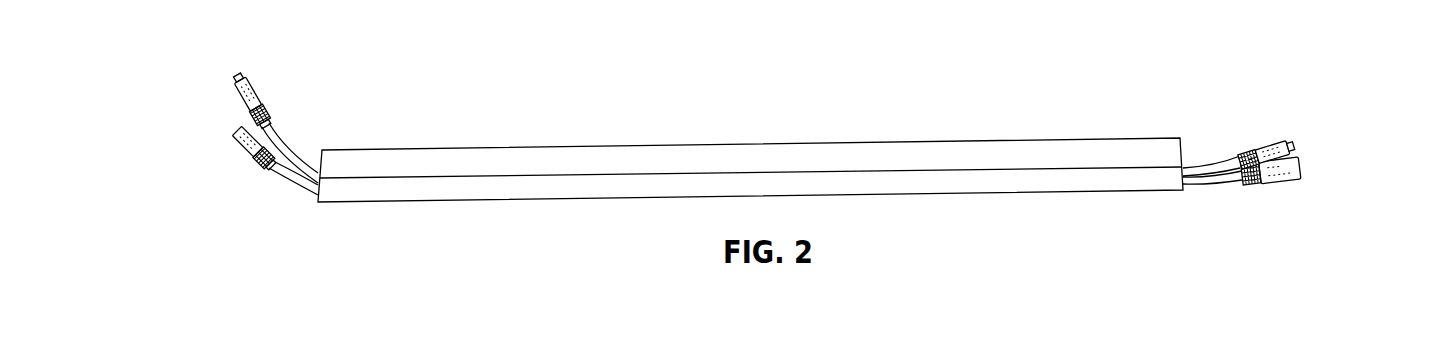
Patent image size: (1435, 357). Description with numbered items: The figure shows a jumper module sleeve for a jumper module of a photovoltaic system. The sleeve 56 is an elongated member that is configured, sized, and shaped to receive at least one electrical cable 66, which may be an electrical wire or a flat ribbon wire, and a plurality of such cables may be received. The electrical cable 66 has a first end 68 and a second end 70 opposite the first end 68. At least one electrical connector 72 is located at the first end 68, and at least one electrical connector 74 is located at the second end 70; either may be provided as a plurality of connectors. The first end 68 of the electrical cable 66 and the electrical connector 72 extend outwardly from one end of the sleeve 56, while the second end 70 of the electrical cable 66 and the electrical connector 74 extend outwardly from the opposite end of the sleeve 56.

The sleeve 56 is at (1074, 141).
The electrical cable 66 is at (287, 150).
The first end of the electrical cable 68 is at (287, 180).
The second end of the electrical cable 70 is at (1209, 154).
The electrical connector 72 is at (244, 148).
The electrical connector 74 is at (1293, 143).